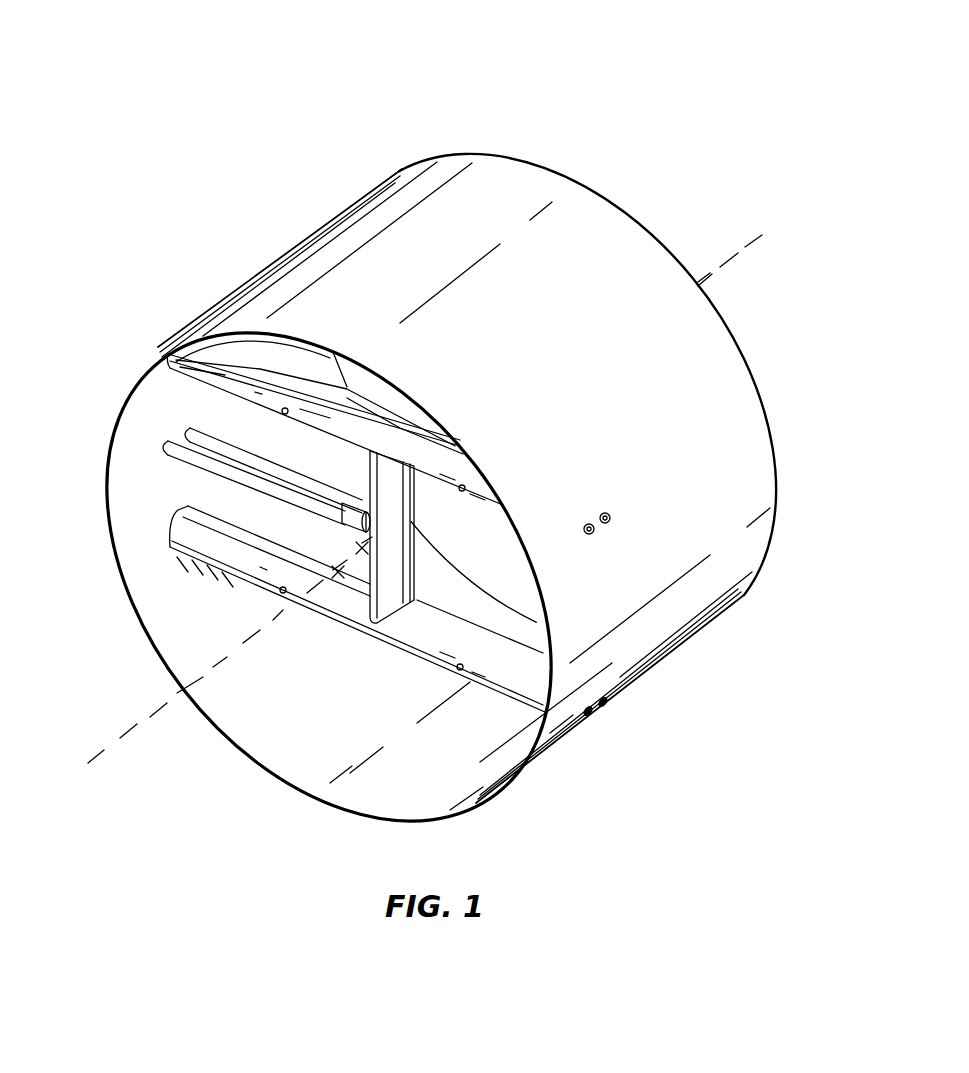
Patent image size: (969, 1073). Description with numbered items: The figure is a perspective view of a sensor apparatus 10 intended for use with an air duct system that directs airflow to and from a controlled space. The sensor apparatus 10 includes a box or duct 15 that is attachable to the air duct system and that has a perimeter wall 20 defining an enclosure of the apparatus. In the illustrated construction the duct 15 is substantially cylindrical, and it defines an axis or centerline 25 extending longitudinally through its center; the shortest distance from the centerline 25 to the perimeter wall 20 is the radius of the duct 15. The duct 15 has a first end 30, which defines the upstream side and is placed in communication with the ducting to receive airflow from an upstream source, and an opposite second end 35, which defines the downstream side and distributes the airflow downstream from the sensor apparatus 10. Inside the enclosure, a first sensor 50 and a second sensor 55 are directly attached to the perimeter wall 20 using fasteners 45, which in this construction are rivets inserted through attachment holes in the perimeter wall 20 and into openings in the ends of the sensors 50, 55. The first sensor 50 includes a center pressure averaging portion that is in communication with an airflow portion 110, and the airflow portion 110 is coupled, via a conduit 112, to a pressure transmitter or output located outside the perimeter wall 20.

The sensor apparatus 10 is at (628, 80).
The duct 15 is at (307, 238).
The perimeter wall 20 is at (738, 406).
The centerline 25 is at (777, 222).
The first end 30 is at (107, 447).
The second end 35 is at (627, 213).
The fasteners 45 is at (605, 513).
The first sensor 50 is at (388, 625).
The second sensor 55 is at (388, 413).
The airflow portion 110 is at (360, 528).
The conduit 112 is at (200, 459).